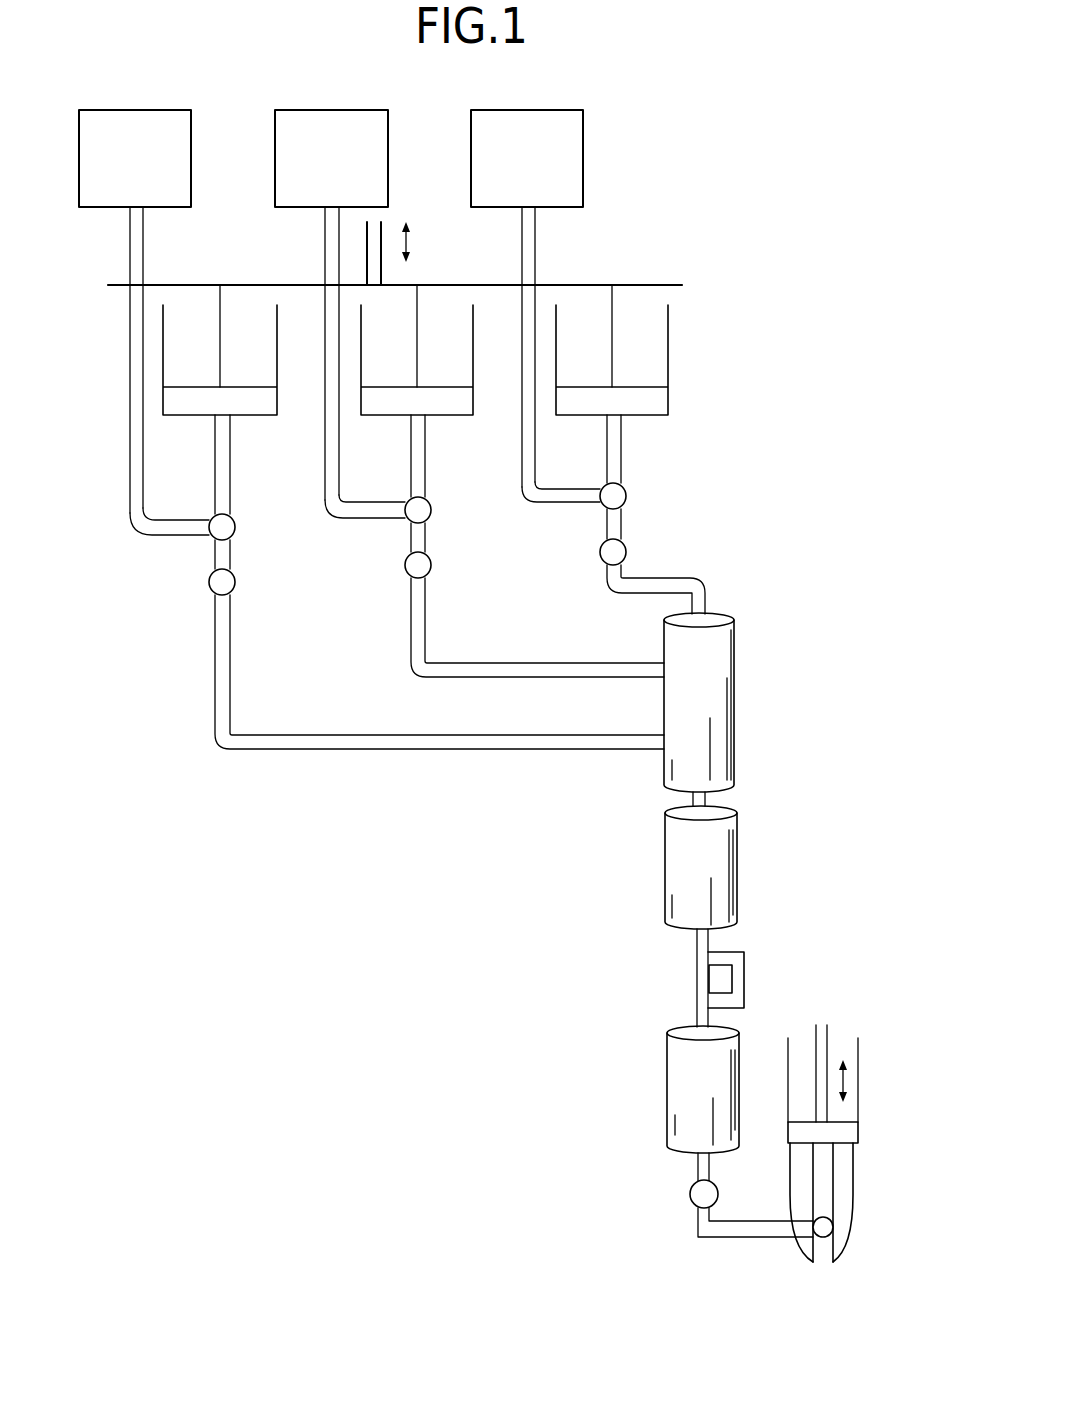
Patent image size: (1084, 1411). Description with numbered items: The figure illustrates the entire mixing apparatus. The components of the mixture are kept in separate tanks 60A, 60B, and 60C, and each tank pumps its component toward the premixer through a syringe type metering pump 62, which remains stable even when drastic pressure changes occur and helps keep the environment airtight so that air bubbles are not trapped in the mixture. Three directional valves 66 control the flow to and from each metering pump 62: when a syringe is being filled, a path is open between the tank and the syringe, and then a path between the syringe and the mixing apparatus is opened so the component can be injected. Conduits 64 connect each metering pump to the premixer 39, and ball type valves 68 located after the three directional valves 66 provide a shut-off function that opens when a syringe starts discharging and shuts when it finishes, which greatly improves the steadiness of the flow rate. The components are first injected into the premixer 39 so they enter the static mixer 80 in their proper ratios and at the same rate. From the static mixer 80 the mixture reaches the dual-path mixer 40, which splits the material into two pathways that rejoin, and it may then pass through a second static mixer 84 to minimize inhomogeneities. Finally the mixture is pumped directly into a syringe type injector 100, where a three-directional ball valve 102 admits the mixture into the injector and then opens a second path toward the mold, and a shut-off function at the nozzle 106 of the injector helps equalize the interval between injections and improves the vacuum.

The tank 60A is at (193, 135).
The tank 60B is at (388, 133).
The tank 60C is at (583, 133).
The syringe type metering pump 62 is at (192, 416).
The conduit 64 is at (268, 735).
The three directional valve 66 is at (236, 527).
The ball type valve 68 is at (236, 582).
The premixer 39 is at (745, 618).
The static mixer 80 is at (657, 805).
The dual-path mixer 40 is at (753, 948).
The second static mixer 84 is at (657, 1032).
The syringe type injector 100 is at (859, 1167).
The three-directional ball valve 102 is at (823, 1238).
The nozzle 106 is at (855, 1148).